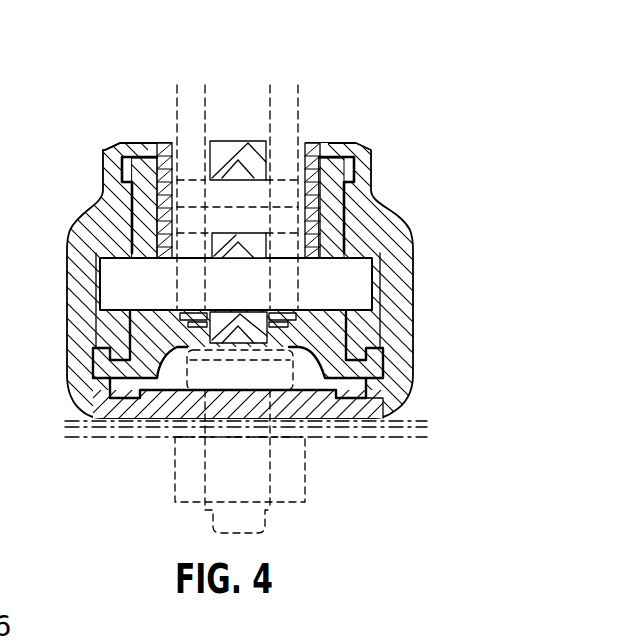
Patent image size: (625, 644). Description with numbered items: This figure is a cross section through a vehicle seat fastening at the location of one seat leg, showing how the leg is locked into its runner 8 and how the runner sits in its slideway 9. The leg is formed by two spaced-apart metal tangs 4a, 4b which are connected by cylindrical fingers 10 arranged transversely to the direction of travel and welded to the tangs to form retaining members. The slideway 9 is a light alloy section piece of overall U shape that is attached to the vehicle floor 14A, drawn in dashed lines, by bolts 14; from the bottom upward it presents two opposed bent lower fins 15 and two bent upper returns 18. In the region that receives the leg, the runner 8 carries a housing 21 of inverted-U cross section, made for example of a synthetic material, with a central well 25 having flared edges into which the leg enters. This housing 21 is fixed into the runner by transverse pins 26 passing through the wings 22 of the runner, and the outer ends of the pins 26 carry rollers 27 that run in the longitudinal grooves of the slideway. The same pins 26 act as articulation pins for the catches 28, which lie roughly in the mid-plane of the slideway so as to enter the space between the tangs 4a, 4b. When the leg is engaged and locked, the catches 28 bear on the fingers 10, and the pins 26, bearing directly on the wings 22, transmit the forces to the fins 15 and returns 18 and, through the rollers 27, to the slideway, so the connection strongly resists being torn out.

The metal tang 4a is at (283, 93).
The metal tang 4b is at (190, 97).
The runner 8 is at (153, 338).
The slideway 9 is at (390, 398).
The cylindrical finger 10 is at (260, 195).
The bolt 14 is at (195, 403).
The floor 14A is at (118, 432).
The bent lower fin 15 is at (387, 340).
The bent upper return 18 is at (123, 153).
The housing 21 is at (147, 230).
The wing 22 is at (160, 203).
The well 25 is at (170, 141).
The transverse pin 26 is at (123, 287).
The roller 27 is at (370, 247).
The catch 28 is at (217, 155).